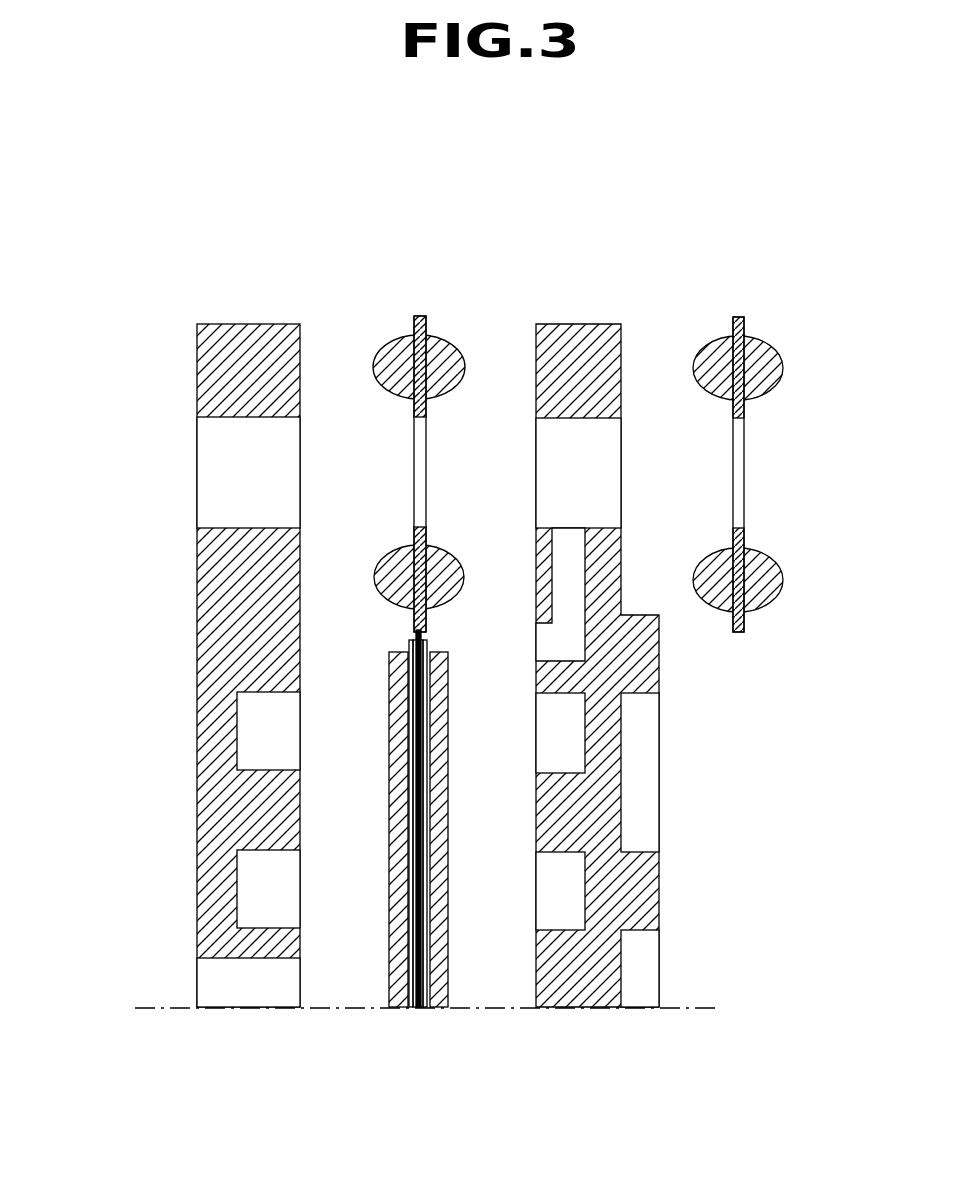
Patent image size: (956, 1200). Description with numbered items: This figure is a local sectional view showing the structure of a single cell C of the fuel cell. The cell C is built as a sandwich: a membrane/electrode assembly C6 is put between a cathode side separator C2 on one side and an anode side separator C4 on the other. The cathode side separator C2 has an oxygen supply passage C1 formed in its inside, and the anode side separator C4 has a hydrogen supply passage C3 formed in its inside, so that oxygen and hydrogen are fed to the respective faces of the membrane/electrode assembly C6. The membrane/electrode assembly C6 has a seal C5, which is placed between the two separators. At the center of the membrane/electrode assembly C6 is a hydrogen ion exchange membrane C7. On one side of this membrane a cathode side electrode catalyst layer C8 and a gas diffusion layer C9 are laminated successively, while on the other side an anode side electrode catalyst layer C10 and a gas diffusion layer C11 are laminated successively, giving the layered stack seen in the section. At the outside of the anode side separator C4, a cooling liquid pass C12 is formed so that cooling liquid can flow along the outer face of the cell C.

The cell C is at (199, 295).
The oxygen supply passage C1 is at (290, 862).
The cathode side separator C2 is at (197, 580).
The hydrogen supply passage C3 is at (547, 865).
The anode side separator C4 is at (660, 661).
The seal C5 is at (457, 385).
The membrane/electrode assembly C6 is at (432, 846).
The hydrogen ion exchange membrane C7 is at (427, 636).
The cathode side electrode catalyst layer C8 is at (400, 647).
The gas diffusion layer C9 is at (388, 738).
The anode side electrode catalyst layer C10 is at (438, 647).
The gas diffusion layer C11 is at (448, 738).
The cooling liquid pass C12 is at (648, 838).